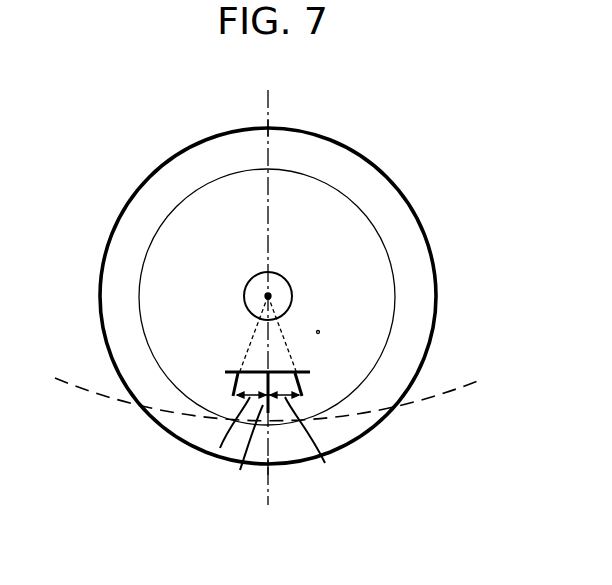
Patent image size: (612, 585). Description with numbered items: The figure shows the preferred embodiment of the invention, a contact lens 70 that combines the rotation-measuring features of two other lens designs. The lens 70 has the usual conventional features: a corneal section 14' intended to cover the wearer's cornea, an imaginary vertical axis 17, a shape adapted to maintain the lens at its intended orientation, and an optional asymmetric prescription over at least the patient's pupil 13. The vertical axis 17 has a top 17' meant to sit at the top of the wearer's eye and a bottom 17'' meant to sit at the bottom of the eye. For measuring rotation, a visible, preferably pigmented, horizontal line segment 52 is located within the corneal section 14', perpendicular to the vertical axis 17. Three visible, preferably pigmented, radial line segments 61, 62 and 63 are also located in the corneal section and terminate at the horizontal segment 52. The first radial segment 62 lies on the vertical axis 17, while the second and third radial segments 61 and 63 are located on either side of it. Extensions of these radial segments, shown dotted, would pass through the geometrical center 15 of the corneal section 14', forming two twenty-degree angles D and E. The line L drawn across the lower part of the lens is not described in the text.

The lens 70 is at (435, 282).
The corneal section 14' is at (306, 297).
The vertical axis 17 is at (298, 297).
The top of vertical axis 17' is at (298, 116).
The bottom of vertical axis 17'' is at (295, 474).
The pupil 13 is at (290, 282).
The geometrical center 15 is at (265, 295).
The horizontal line segment 52 is at (237, 368).
The second radial line segment 61 is at (233, 393).
The third radial line segment 63 is at (303, 393).
The first radial line segment 62 is at (244, 451).
The angle D is at (220, 448).
The angle E is at (314, 443).
The liquid level line L is at (408, 403).